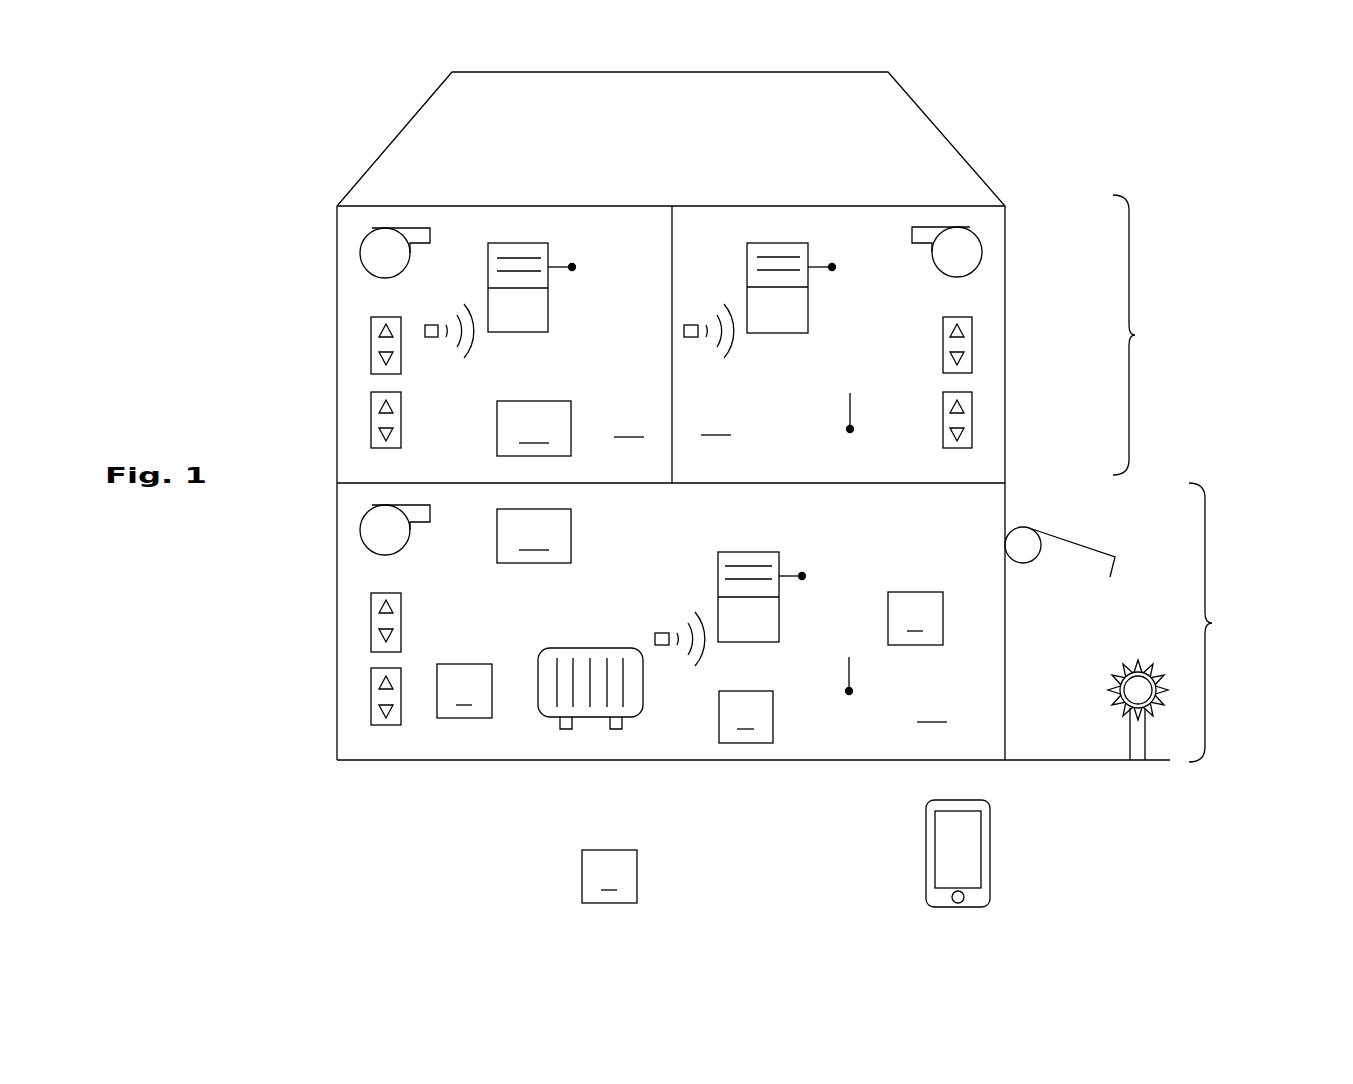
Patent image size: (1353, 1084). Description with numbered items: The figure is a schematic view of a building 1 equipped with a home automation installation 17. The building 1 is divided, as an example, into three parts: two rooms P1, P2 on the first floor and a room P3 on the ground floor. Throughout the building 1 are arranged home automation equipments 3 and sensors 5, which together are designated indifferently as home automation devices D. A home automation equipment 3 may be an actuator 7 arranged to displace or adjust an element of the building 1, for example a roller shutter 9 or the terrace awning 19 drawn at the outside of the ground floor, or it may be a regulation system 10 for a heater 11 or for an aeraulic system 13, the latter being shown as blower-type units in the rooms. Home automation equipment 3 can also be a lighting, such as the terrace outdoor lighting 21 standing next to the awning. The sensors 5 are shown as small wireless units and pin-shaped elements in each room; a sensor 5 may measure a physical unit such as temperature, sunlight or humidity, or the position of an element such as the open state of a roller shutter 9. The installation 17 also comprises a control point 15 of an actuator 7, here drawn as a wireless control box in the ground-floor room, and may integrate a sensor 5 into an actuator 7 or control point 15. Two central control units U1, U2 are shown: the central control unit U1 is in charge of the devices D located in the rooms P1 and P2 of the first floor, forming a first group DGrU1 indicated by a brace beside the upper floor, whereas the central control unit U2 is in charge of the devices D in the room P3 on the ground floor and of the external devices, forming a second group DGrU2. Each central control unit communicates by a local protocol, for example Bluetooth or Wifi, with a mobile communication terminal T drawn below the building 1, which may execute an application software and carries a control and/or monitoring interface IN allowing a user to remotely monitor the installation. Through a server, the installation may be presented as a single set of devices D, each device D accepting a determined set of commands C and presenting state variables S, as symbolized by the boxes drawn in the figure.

The building 1 is at (962, 153).
The home automation equipment 3 is at (706, 493).
The sensor 5 is at (428, 325).
The actuator 7 is at (676, 478).
The roller shutter 9 is at (520, 243).
The regulation system 10 is at (371, 413).
The heater 11 is at (592, 652).
The aeraulic system 13 is at (372, 251).
The control point 15 is at (463, 664).
The home automation installation 17 is at (985, 104).
The terrace awning 19 is at (1083, 547).
The terrace outdoor lighting 21 is at (1133, 736).
The central control unit U1 is at (534, 428).
The central control unit U2 is at (534, 536).
The part of the building P1 is at (629, 424).
The part of the building P2 is at (716, 421).
The part of the building P3 is at (932, 708).
The commands C is at (915, 618).
The home automation device D is at (746, 717).
The state variables S is at (609, 876).
The control and/or monitoring interface IN is at (945, 861).
The mobile communication terminal T is at (968, 915).
The group of devices DGrU1 is at (1164, 335).
The group of devices DGrU2 is at (1242, 622).